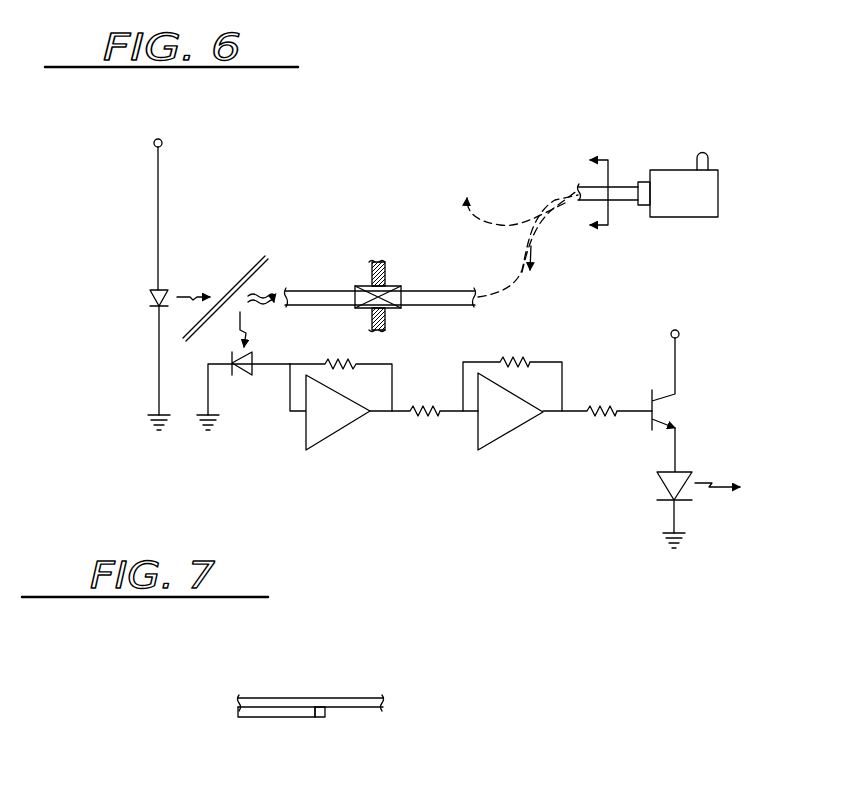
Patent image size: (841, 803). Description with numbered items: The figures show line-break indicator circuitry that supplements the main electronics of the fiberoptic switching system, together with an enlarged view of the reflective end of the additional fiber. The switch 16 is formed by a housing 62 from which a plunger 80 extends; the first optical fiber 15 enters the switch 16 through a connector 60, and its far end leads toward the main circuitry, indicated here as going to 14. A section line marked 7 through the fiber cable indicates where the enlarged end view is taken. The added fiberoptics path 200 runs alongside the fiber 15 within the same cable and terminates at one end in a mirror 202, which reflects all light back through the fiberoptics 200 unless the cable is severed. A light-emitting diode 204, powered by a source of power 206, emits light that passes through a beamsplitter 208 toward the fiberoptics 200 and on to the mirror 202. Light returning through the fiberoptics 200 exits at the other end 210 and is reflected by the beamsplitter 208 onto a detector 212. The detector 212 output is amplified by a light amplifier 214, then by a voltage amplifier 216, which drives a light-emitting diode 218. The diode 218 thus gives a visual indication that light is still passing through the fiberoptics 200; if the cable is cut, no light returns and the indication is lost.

In FIG. 6, the source of power 206 is at (167, 144).
In FIG. 6, the light-emitting diode 204 is at (169, 286).
In FIG. 6, the beamsplitter 208 is at (266, 254).
In FIG. 6, the other end of fiberoptics 210 is at (286, 287).
In FIG. 6, the fiberoptics path 200 is at (337, 284).
In FIG. 7, the fiberoptics path 200 is at (250, 717).
In FIG. 6, the optical fiber 15 is at (549, 191).
In FIG. 7, the optical fiber 15 is at (279, 695).
In FIG. 6, the connector 14 is at (500, 199).
In FIG. 6, the connector 60 is at (609, 164).
In FIG. 6, the section line 7- 7 is at (587, 193).
In FIG. 6, the switch 16 is at (741, 181).
In FIG. 6, the housing 62 is at (697, 203).
In FIG. 6, the plunger 80 is at (714, 151).
In FIG. 6, the detector 212 is at (251, 380).
In FIG. 6, the light amplifier 214 is at (325, 446).
In FIG. 6, the voltage amplifier 216 is at (499, 446).
In FIG. 6, the light-emitting diode 218 is at (700, 462).
In FIG. 7, the mirror 202 is at (322, 719).